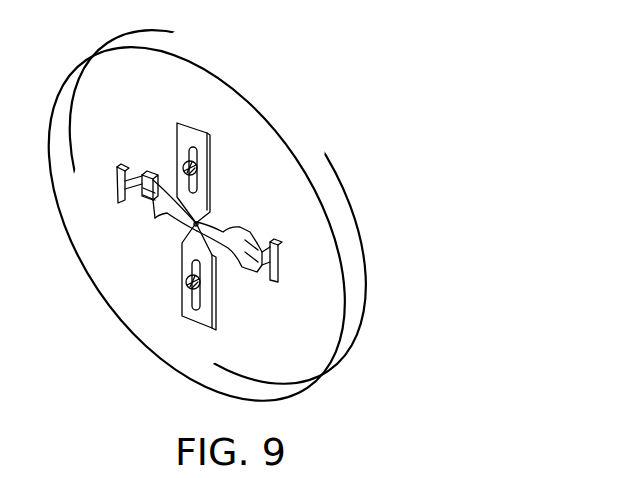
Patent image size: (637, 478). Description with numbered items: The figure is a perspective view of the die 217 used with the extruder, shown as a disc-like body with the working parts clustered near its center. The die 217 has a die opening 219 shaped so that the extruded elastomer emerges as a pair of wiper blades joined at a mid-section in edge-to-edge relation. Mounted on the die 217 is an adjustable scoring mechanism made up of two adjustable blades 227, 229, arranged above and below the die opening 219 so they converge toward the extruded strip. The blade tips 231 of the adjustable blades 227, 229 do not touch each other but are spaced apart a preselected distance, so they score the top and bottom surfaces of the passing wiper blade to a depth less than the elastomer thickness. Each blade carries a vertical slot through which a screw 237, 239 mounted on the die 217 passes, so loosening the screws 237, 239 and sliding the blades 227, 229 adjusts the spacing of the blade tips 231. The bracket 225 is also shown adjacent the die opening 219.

The die 217 is at (285, 122).
The die opening 219 is at (143, 205).
The right bracket 225 is at (226, 228).
The adjustable blade 227 is at (183, 134).
The adjustable blade 229 is at (201, 316).
The blade tips 231 is at (186, 236).
The screw 237 is at (200, 166).
The screw 239 is at (186, 281).